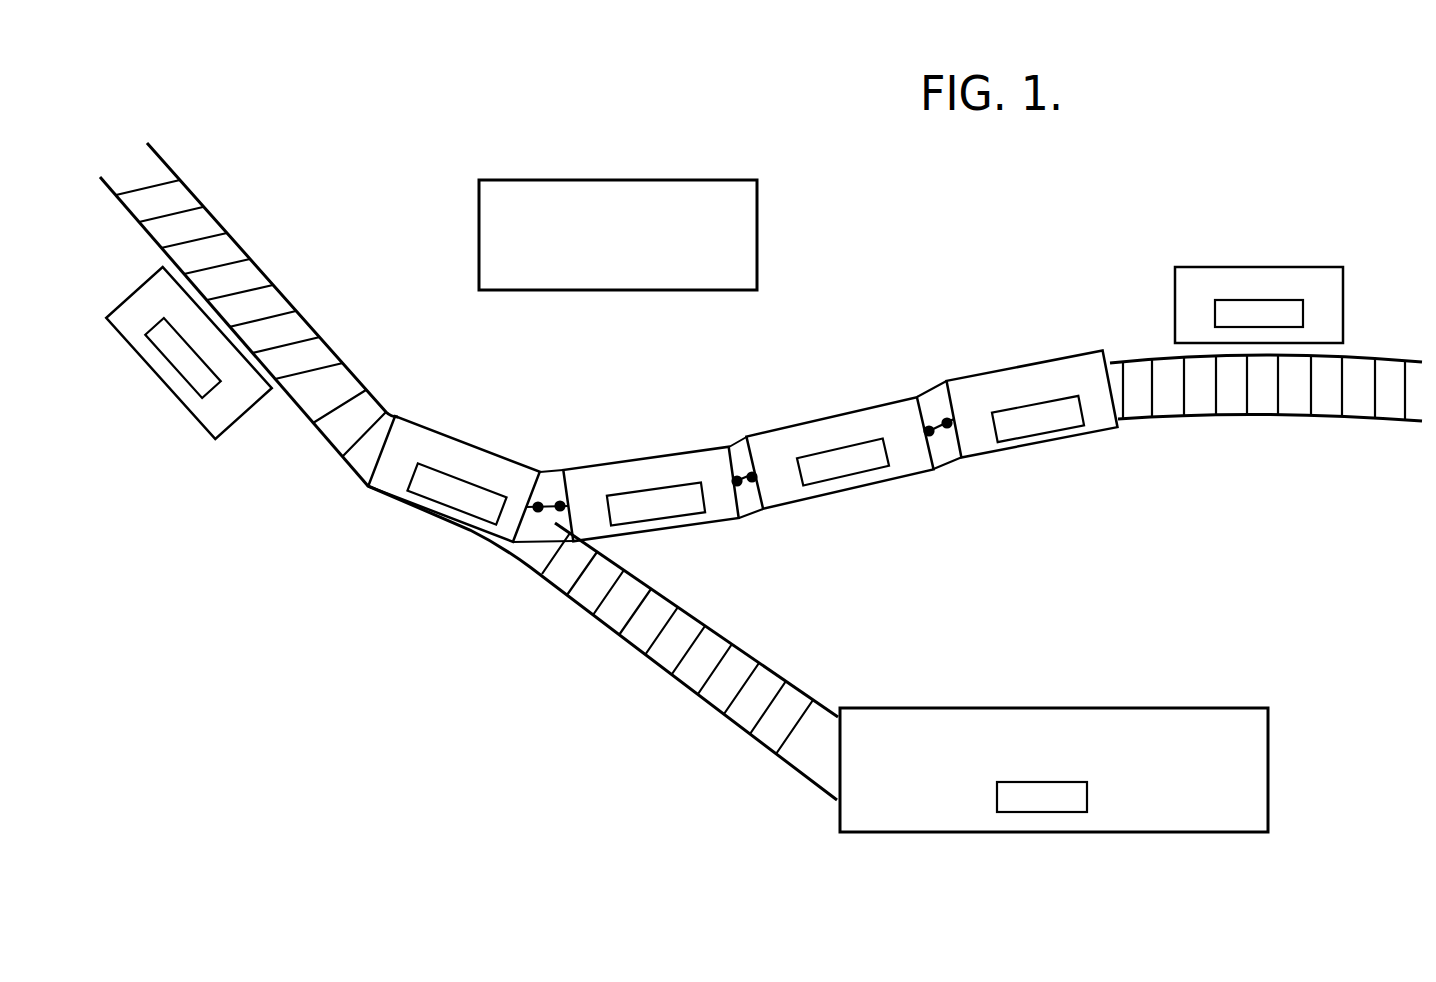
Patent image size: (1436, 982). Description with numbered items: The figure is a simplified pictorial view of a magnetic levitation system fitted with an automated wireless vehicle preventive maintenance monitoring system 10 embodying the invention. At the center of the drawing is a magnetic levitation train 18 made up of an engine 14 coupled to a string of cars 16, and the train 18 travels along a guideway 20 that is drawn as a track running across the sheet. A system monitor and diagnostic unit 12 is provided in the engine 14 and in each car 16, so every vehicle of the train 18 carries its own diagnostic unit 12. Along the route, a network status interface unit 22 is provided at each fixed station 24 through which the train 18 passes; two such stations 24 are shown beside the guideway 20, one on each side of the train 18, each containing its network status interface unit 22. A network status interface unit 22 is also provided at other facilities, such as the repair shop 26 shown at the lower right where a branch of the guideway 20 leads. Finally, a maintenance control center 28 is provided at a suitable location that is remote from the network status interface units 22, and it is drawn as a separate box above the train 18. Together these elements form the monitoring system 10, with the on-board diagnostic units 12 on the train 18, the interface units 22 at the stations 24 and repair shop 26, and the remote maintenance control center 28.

The automated wireless vehicle preventive maintenance monitoring system 10 is at (363, 203).
The system monitor and diagnostic unit 12 is at (433, 500).
The engine 14 is at (1093, 350).
The car 16 is at (478, 446).
The magnetic levitation train 18 is at (804, 338).
The guideway 20 is at (709, 625).
The network status interface unit 22 is at (143, 350).
The fixed station 24 is at (232, 412).
The repair shop 26 is at (1268, 708).
The maintenance control center 28 is at (757, 181).